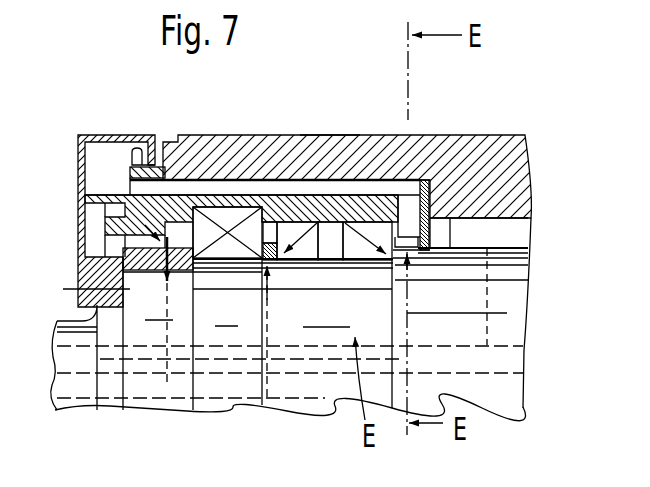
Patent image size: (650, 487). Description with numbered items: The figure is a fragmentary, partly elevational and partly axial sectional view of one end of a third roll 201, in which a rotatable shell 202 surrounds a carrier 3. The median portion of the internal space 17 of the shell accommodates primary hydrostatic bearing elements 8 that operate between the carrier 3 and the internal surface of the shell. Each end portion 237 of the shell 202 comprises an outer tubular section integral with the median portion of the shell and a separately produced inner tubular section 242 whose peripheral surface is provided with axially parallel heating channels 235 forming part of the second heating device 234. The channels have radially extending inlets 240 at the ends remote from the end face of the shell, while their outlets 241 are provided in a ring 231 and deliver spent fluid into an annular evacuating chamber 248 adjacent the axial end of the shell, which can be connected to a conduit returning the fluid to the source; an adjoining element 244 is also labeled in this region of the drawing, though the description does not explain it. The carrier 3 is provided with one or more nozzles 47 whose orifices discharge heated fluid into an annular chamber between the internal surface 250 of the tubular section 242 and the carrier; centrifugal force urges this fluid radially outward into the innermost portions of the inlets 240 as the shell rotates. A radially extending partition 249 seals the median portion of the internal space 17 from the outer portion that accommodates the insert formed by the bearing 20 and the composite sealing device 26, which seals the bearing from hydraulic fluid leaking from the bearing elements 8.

The third roll 201 is at (502, 131).
The shell 202 is at (513, 173).
The end portion of the shell 237 is at (327, 153).
The second heating device 234 is at (237, 176).
The heating channels 235 is at (273, 187).
The inner tubular section 242 is at (205, 200).
The outlets 241 is at (145, 186).
The annular evacuating chamber 248 is at (100, 167).
The ring 231 is at (107, 222).
The annular gap 244 is at (410, 195).
The inlets 240 is at (430, 181).
The internal space 17 is at (488, 218).
The primary hydrostatic bearing elements 8 is at (520, 237).
The radially extending partition 249 is at (462, 250).
The internal surface of the tubular section 250 is at (404, 226).
The nozzles 47 is at (407, 292).
The carrier 3 is at (497, 395).
The bearings 20 is at (229, 232).
The composite sealing device 26 is at (307, 255).